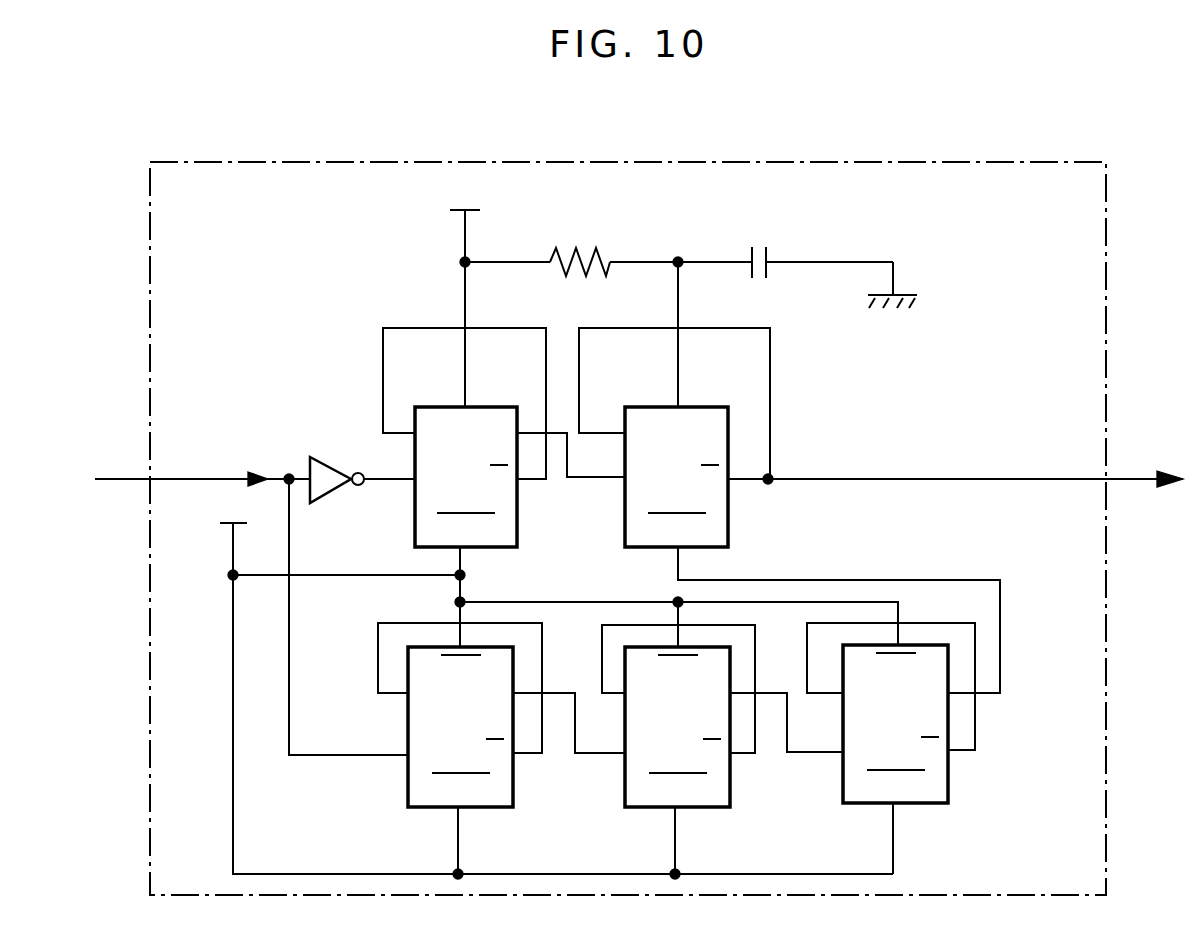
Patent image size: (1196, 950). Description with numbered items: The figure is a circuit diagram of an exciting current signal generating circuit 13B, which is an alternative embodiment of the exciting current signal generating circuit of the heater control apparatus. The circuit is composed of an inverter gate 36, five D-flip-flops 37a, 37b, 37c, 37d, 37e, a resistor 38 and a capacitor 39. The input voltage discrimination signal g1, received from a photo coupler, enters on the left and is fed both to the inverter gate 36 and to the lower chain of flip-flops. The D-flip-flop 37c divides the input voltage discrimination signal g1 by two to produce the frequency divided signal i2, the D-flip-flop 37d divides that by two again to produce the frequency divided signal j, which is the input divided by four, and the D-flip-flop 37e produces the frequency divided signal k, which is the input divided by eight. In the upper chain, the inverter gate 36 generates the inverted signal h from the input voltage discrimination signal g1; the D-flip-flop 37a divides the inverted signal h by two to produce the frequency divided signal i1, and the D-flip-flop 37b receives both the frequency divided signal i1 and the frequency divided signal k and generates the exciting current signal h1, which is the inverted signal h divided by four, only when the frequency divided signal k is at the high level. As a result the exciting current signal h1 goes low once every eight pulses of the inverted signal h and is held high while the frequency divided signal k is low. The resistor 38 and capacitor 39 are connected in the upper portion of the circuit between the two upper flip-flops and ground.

The exciting current signal generating circuit 13B is at (824, 160).
The inverter gate 36 is at (330, 455).
The D-flip-flop 37a is at (484, 406).
The D-flip-flop 37b is at (707, 406).
The D-flip-flop 37c is at (488, 808).
The D-flip-flop 37d is at (705, 808).
The D-flip-flop 37e is at (922, 804).
The resistor 38 is at (584, 252).
The capacitor 39 is at (770, 255).
The input voltage discrimination signal g1 is at (190, 482).
The inverted signal h is at (389, 481).
The exciting current signal h1 is at (841, 478).
The frequency divided signal i1 is at (592, 479).
The frequency divided signal i2 is at (600, 755).
The frequency divided signal j is at (822, 753).
The frequency divided signal k is at (930, 580).